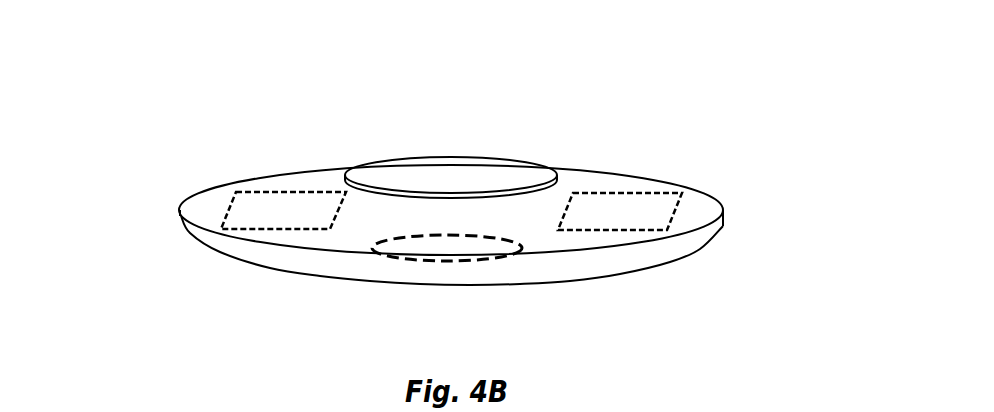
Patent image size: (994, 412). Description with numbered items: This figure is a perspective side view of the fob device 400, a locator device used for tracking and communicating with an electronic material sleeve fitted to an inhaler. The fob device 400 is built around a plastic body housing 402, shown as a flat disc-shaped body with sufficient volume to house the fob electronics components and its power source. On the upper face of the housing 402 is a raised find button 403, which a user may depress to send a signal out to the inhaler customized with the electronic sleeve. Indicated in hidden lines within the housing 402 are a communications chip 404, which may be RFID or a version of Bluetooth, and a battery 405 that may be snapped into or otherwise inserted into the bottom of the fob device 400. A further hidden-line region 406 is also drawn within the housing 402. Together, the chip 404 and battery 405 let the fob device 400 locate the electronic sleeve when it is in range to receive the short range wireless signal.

The fob device 400 is at (555, 77).
The plastic body housing 402 is at (182, 235).
The find button 403 is at (452, 155).
The communications chip 404 is at (630, 193).
The battery 405 is at (445, 260).
The first coil region 406 is at (290, 229).